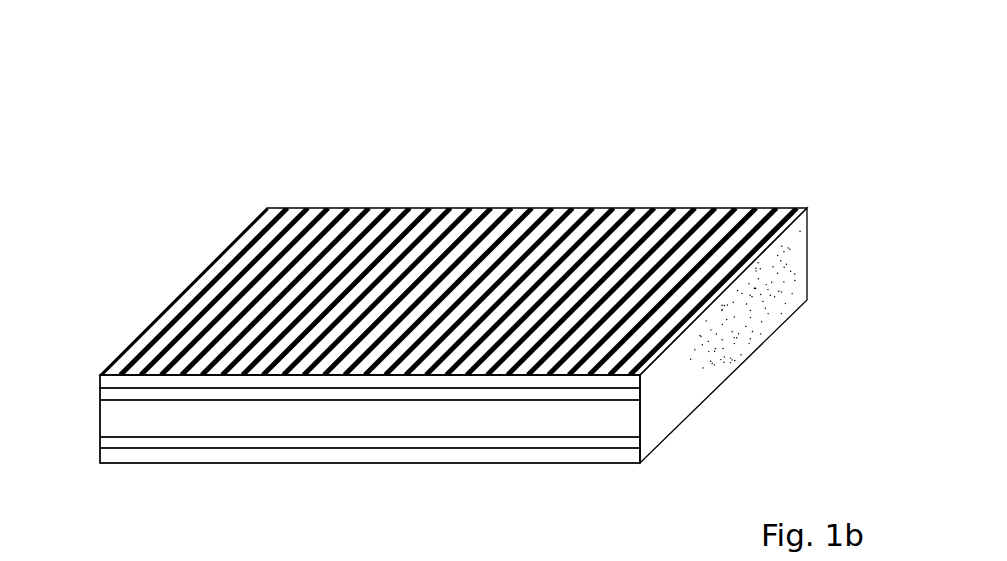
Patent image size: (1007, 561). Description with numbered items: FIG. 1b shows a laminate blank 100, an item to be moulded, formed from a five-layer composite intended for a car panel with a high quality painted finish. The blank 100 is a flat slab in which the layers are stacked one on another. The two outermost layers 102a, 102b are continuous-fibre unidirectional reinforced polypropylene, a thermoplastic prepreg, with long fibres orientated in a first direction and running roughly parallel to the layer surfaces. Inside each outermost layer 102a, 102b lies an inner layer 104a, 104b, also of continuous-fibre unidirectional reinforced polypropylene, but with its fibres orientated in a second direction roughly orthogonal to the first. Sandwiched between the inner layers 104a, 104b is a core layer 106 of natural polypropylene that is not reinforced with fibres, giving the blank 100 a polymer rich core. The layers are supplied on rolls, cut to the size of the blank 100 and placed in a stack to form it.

The laminate blank 100 is at (688, 118).
The outermost layer 102a is at (100, 383).
The outermost layer 102b is at (420, 465).
The inner layer 104a is at (630, 398).
The inner layer 104b is at (628, 450).
The core layer 106 is at (370, 420).